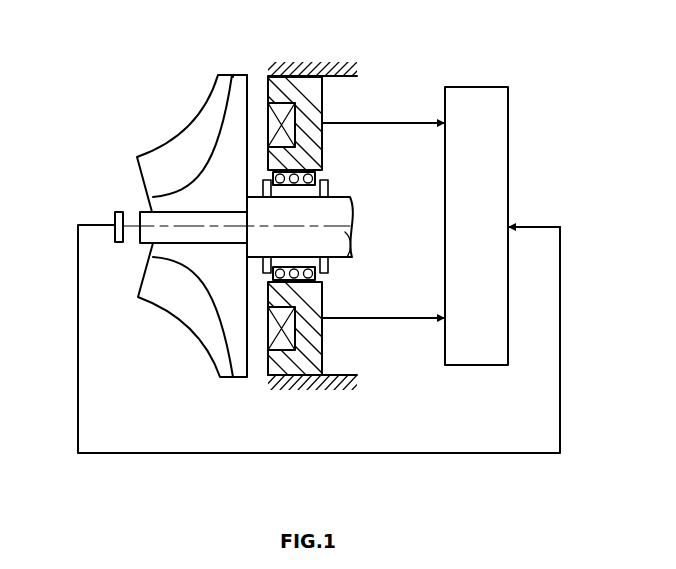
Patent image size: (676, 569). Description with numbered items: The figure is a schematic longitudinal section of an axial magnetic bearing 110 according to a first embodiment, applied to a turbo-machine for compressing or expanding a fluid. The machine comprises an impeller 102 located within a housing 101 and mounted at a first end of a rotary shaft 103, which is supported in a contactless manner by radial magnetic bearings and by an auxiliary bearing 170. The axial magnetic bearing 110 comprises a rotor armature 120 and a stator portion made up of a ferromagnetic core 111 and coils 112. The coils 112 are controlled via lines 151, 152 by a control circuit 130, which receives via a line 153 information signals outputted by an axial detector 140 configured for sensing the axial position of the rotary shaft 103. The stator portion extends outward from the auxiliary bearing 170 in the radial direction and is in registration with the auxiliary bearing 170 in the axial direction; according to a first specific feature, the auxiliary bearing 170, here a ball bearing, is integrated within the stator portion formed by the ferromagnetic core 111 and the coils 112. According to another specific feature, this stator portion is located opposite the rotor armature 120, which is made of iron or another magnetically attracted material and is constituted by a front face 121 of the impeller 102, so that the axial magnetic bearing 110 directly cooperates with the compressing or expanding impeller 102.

The housing 101 is at (300, 74).
The impeller 102 is at (182, 122).
The rotary shaft 103 is at (340, 248).
The axial magnetic bearing 110 is at (286, 388).
The ferromagnetic core 111 is at (313, 108).
The coils 112 is at (287, 138).
The rotor armature 120 is at (240, 381).
The front face of the impeller 121 is at (255, 82).
The control circuit 130 is at (470, 86).
The axial detector 140 is at (115, 212).
The line 151 is at (405, 320).
The line 152 is at (405, 122).
The line 153 is at (128, 451).
The auxiliary bearing 170 is at (336, 173).